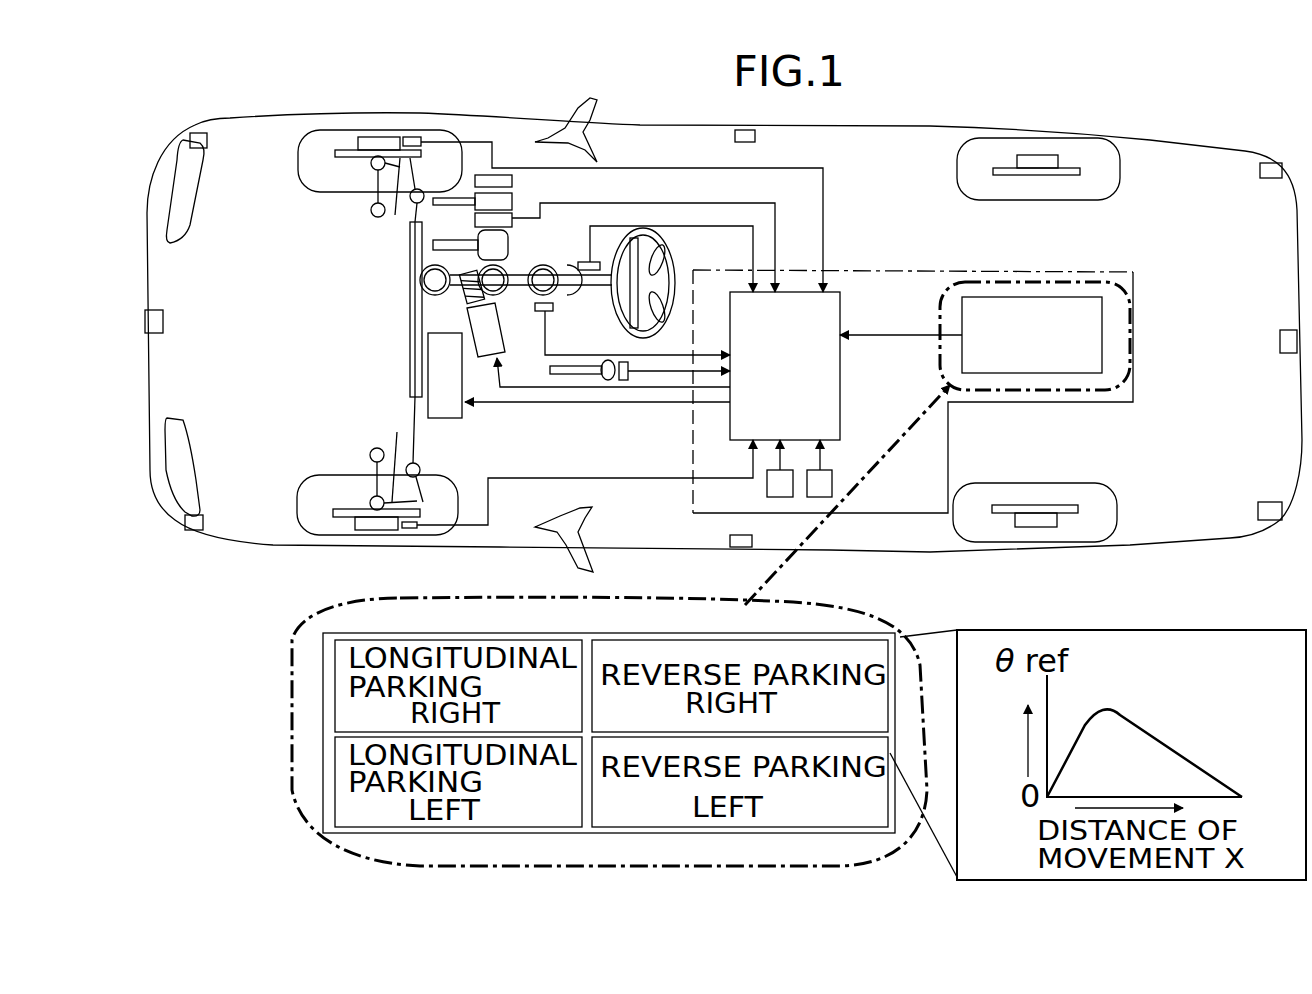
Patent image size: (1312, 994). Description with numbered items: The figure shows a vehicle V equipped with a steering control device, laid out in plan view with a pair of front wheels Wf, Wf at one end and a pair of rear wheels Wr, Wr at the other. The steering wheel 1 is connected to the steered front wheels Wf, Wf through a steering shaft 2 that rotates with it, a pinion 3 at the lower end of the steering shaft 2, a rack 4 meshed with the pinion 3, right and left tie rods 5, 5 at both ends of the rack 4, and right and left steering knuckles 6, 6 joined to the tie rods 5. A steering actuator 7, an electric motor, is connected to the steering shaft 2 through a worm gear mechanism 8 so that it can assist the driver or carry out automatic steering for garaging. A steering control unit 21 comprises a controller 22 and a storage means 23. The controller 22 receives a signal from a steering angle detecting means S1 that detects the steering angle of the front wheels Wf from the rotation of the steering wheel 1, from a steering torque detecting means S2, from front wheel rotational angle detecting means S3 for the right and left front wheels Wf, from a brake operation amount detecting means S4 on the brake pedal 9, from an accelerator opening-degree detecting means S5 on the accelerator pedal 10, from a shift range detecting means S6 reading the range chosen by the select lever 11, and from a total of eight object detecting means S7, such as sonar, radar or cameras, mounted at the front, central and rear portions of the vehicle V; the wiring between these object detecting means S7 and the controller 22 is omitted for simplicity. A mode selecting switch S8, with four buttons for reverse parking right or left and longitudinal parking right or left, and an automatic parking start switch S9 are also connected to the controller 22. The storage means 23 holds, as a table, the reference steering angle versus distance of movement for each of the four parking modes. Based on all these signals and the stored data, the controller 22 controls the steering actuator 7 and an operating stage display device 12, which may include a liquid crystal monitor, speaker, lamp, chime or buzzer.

The steering wheel 1 is at (667, 257).
The steering shaft 2 is at (585, 288).
The pinion 3 is at (425, 264).
The rack 4 is at (410, 338).
The tie rod 5 is at (420, 203).
The steering knuckle 6 is at (393, 333).
The steering actuator 7 is at (493, 345).
The worm gear mechanism 8 is at (460, 298).
The brake pedal 9 is at (508, 245).
The accelerator pedal 10 is at (510, 202).
The select lever 11 is at (607, 381).
The operating stage display device 12 is at (452, 381).
The steering control unit 21 is at (1140, 360).
The controller 22 is at (794, 385).
The storage means 23 is at (1040, 354).
The steering angle detecting means S1 is at (580, 262).
The steering torque detecting means S2 is at (537, 312).
The front wheel rotational angle detecting means S3 is at (413, 137).
The brake operation amount detecting means S4 is at (507, 217).
The accelerator opening-degree detecting means S5 is at (498, 178).
The shift range detecting means S6 is at (626, 381).
The object detecting means S7 is at (200, 143).
The mode selecting switch S8 is at (775, 487).
The automatic parking start switch S9 is at (813, 488).
The vehicle V is at (266, 550).
The front wheel Wf is at (317, 180).
The rear wheel Wr is at (1112, 177).